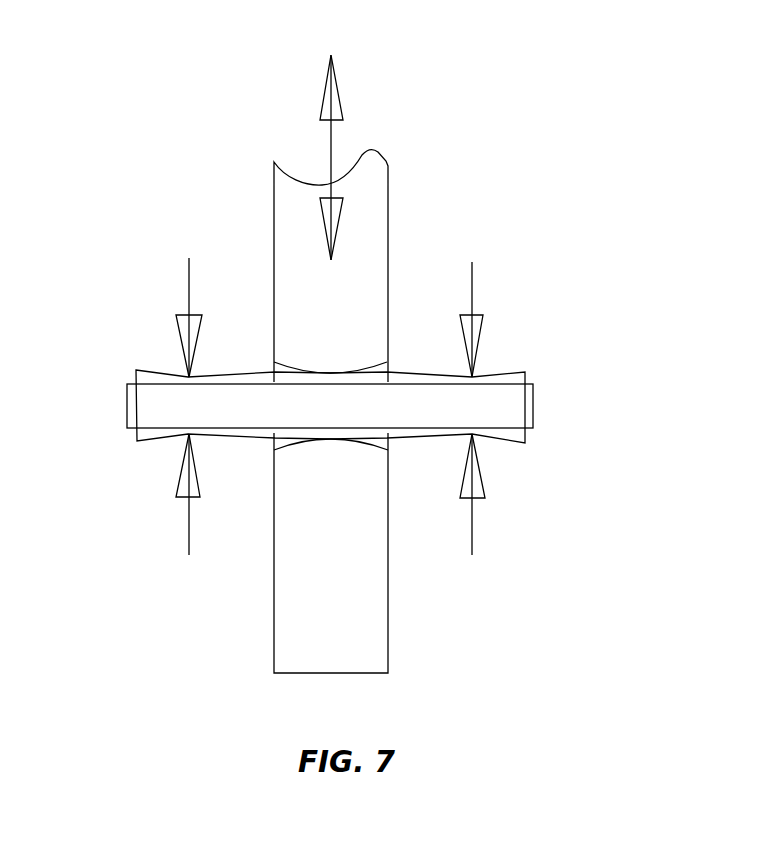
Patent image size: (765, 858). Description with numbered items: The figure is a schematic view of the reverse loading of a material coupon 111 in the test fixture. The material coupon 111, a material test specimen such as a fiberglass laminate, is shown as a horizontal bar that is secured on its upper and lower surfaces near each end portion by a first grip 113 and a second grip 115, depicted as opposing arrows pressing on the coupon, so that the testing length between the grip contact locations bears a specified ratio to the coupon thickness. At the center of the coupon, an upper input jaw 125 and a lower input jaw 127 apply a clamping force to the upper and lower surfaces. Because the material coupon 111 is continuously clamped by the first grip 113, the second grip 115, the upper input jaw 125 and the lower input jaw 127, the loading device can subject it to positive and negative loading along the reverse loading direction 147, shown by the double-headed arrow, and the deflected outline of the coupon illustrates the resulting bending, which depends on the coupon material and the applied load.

The material coupon 111 is at (525, 375).
The first grip 113 is at (189, 289).
The second grip 115 is at (473, 278).
The upper input jaw 125 is at (388, 268).
The lower input jaw 127 is at (388, 612).
The reverse loading direction 147 is at (331, 148).